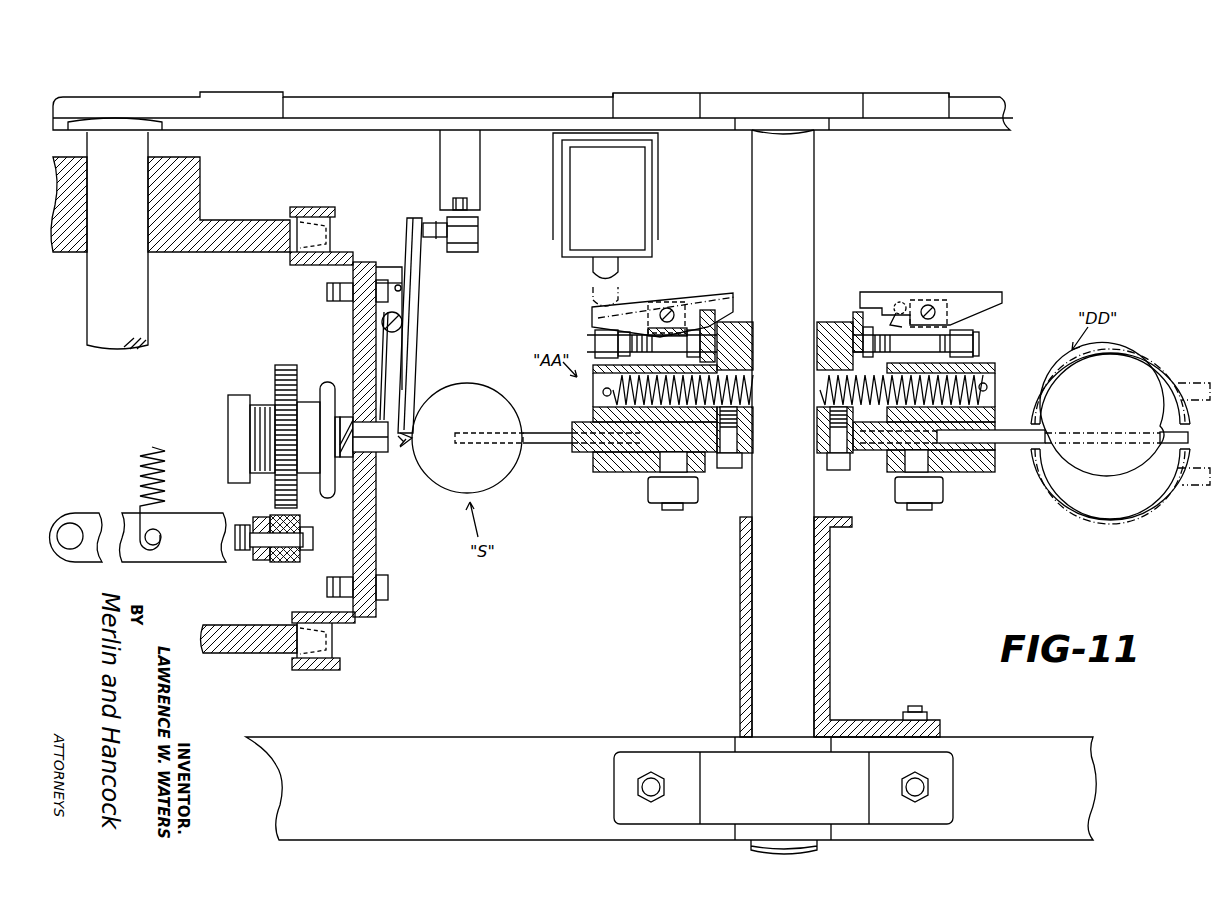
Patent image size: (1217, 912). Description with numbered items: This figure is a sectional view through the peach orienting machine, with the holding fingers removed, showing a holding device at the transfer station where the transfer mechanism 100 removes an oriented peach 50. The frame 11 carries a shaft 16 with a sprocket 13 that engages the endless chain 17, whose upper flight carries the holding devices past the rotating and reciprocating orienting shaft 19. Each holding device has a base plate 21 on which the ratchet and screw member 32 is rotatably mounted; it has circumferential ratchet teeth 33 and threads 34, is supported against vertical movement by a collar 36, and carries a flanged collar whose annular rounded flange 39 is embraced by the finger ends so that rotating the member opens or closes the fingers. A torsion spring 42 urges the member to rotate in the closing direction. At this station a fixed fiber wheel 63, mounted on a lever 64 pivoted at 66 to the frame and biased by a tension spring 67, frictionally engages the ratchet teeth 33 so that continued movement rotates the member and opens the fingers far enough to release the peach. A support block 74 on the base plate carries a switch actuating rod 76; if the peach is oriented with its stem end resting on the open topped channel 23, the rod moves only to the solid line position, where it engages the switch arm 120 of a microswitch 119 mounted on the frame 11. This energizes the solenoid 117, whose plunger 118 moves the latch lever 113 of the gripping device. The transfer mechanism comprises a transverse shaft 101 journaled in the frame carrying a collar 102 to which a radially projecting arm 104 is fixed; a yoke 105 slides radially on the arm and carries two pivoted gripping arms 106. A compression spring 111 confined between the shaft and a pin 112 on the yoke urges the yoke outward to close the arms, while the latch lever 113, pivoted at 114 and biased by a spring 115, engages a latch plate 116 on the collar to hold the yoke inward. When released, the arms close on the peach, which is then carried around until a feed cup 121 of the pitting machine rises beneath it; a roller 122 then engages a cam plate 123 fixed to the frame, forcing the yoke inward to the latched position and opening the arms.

The frame 11 is at (328, 124).
The sprocket 13 is at (240, 227).
The shaft 16 is at (141, 325).
The endless chain 17 is at (337, 207).
The orienting shaft 19 is at (408, 437).
The base plate 21 is at (365, 262).
The open topped channel 23 is at (402, 450).
The ratchet and screw member 32 is at (275, 383).
The ratchet teeth 33 is at (298, 355).
The threads 34 is at (347, 458).
The collar 36 is at (233, 412).
The annular rounded flange 39 is at (327, 382).
The torsion spring 42 is at (262, 473).
The peach 50 is at (460, 382).
The fiber wheel 63 is at (290, 562).
The lever 64 is at (207, 498).
The pivot 66 is at (70, 524).
The tension spring 67 is at (140, 468).
The support block 74 is at (400, 300).
The switch actuating rod 76 is at (412, 286).
The transfer mechanism 100 is at (666, 548).
The shaft 101 is at (808, 634).
The collar 102 is at (733, 322).
The radially projecting arm 104 is at (708, 462).
The yoke 105 is at (633, 473).
The gripping arms 106 is at (565, 455).
The compression spring 111 is at (980, 367).
The pin 112 is at (603, 393).
The latch lever 113 is at (690, 293).
The pivot 114 is at (933, 300).
The spring 115 is at (898, 303).
The latch plate 116 is at (853, 312).
The solenoid 117 is at (636, 212).
The plunger 118 is at (620, 268).
The microswitch 119 is at (466, 237).
The switch arm 120 is at (428, 217).
The feed cup 121 is at (1120, 510).
The roller 122 is at (648, 496).
The cam plate 123 is at (968, 495).